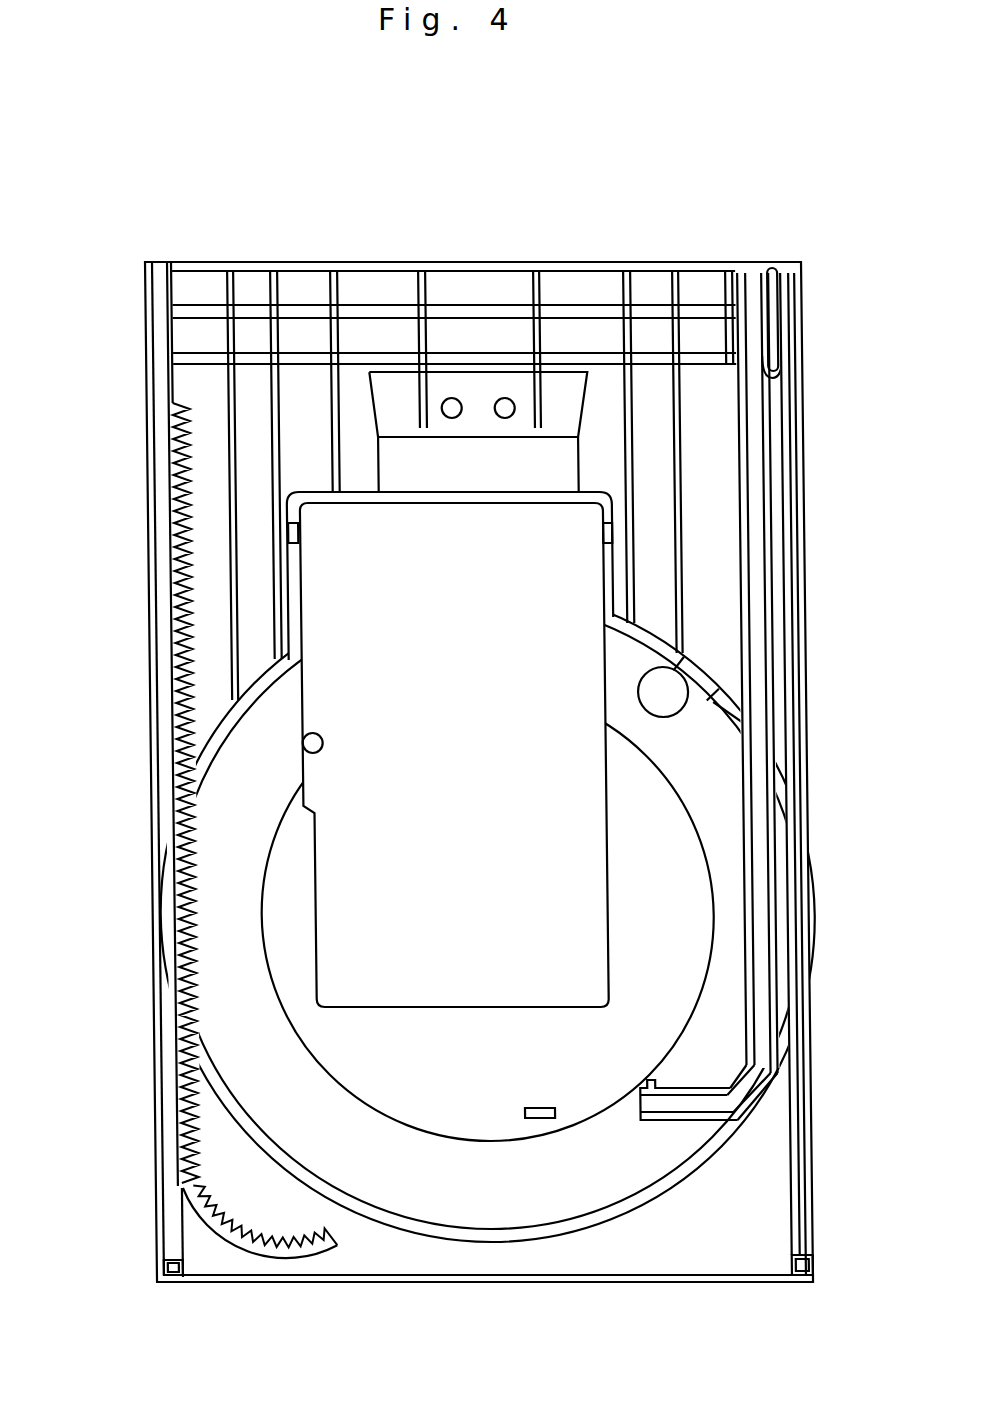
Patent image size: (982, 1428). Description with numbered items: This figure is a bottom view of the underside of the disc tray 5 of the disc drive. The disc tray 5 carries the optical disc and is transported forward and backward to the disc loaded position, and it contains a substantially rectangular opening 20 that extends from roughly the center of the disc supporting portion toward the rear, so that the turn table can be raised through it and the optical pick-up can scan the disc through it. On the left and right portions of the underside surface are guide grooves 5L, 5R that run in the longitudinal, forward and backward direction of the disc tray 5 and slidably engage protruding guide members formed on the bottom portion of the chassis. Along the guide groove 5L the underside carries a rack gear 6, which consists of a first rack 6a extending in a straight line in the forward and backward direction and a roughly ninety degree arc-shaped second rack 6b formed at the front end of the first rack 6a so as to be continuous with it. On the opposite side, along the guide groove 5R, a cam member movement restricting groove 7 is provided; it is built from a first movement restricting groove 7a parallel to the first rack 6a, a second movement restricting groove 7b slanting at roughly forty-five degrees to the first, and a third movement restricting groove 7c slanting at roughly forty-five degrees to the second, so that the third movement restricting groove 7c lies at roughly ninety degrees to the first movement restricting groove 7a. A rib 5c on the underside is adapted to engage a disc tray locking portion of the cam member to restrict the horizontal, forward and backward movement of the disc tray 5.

The disc tray 5 is at (808, 199).
The guide groove 5L is at (158, 476).
The guide groove 5R is at (790, 476).
The rib 5c is at (530, 1118).
The rack gear 6 is at (175, 956).
The first rack 6a is at (178, 660).
The second rack 6b is at (220, 1247).
The cam member movement restricting groove 7 is at (757, 650).
The first movement restricting groove 7a is at (746, 330).
The second movement restricting groove 7b is at (740, 1086).
The third movement restricting groove 7c is at (697, 1103).
The opening 20 is at (298, 749).